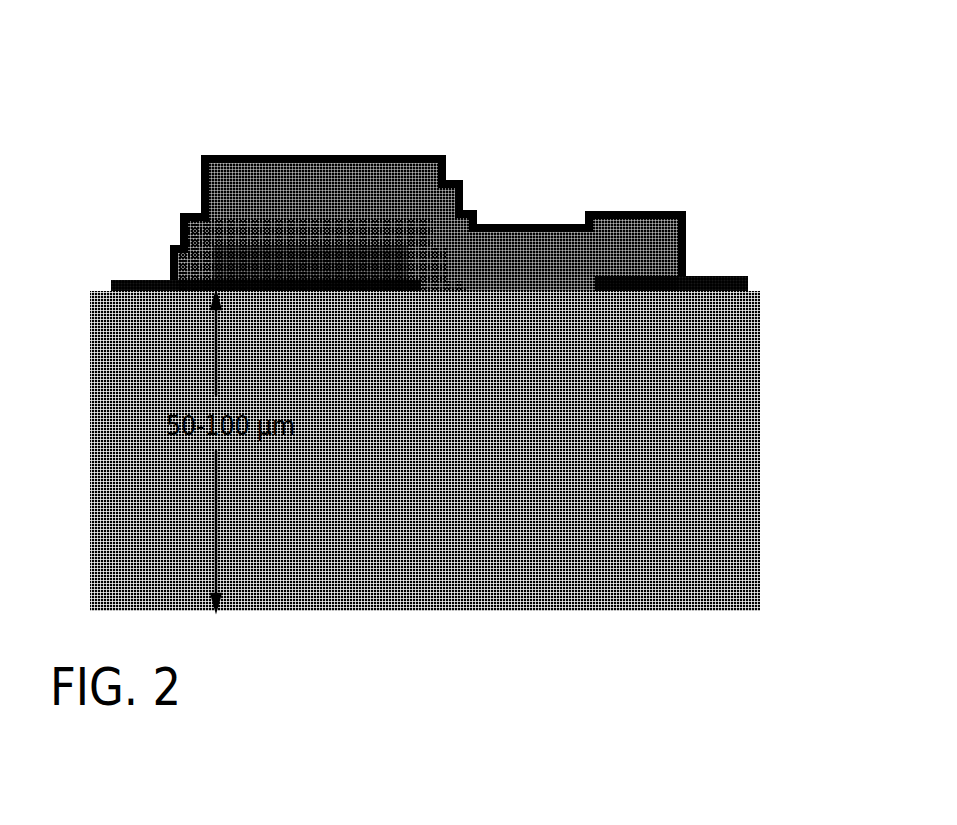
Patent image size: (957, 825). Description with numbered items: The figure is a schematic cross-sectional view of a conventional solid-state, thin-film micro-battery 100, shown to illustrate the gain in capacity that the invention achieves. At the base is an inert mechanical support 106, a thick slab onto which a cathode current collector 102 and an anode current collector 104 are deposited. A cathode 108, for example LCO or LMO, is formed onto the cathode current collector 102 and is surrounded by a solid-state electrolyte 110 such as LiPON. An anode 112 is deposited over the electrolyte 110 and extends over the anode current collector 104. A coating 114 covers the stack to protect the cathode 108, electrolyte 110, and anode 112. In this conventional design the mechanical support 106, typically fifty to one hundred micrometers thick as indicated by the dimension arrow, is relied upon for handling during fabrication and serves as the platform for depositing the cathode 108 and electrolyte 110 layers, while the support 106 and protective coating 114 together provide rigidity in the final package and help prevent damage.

The micro-battery 100 is at (527, 145).
The cathode current collector 102 is at (135, 263).
The anode current collector 104 is at (732, 265).
The mechanical support 106 is at (493, 568).
The cathode 108 is at (247, 247).
The solid-state electrolyte 110 is at (289, 214).
The anode 112 is at (392, 147).
The coating 114 is at (604, 192).